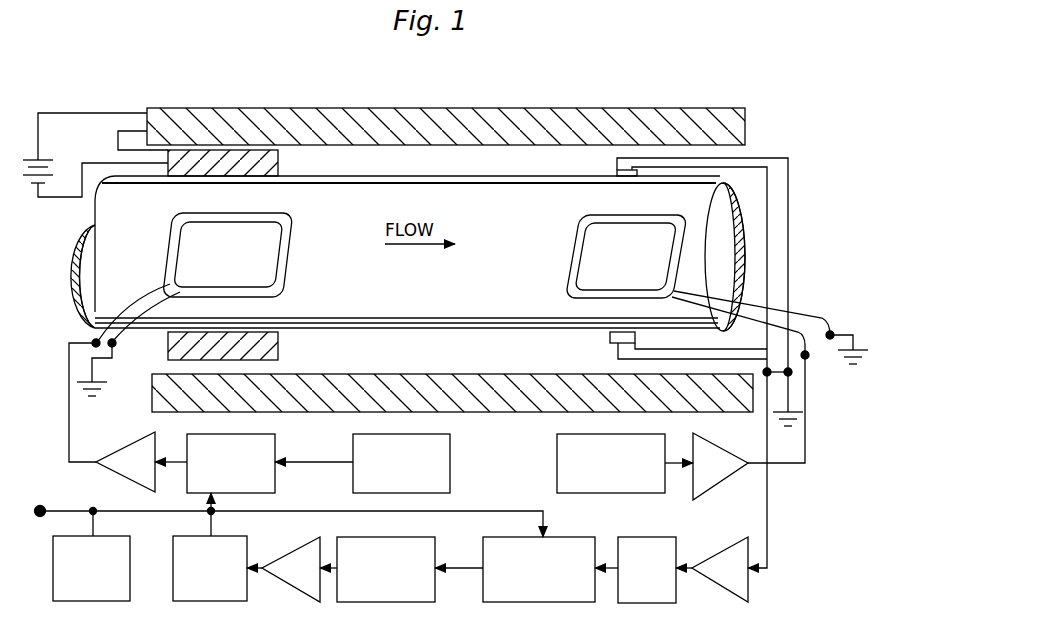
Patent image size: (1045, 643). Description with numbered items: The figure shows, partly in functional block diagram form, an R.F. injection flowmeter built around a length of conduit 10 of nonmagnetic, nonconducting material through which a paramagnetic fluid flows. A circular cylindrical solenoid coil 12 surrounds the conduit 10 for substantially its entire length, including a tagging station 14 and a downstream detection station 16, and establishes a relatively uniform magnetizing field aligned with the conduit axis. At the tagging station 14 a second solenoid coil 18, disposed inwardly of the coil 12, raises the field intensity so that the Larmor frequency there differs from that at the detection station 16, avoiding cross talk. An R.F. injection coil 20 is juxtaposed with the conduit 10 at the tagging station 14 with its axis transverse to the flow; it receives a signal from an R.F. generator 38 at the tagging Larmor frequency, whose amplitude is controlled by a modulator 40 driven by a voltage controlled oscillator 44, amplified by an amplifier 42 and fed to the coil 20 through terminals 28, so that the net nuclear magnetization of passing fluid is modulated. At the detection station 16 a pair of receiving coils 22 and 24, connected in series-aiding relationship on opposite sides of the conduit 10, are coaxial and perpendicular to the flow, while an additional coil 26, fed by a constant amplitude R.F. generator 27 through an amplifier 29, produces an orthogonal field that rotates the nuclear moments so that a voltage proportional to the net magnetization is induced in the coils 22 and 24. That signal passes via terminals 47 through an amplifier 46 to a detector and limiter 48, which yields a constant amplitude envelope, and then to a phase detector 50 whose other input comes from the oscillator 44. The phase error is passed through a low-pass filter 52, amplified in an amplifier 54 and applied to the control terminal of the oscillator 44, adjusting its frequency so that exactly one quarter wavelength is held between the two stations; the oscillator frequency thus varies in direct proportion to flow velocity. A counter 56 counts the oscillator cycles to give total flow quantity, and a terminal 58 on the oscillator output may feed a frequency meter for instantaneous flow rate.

The conduit 10 is at (142, 213).
The solenoid coil 12 is at (426, 118).
The tagging station 14 is at (228, 265).
The detection station 16 is at (631, 265).
The second solenoid coil 18 is at (279, 163).
The R.F. injection coil 20 is at (279, 284).
The receiving coil 22 is at (613, 174).
The receiving coil 24 is at (610, 341).
The additional coil 26 is at (577, 237).
The constant amplitude R.F. generator 27 is at (557, 468).
The terminals 28 is at (85, 353).
The amplifier 29 is at (710, 477).
The R.F. generator 38 is at (440, 452).
The modulator 40 is at (262, 450).
The amplifier 42 is at (137, 448).
The voltage controlled oscillator 44 is at (208, 590).
The amplifier 46 is at (737, 588).
The terminals 47 is at (778, 381).
The detector and limiter 48 is at (673, 596).
The phase detector 50 is at (568, 590).
The low-pass filter 52 is at (378, 590).
The amplifier 54 is at (304, 588).
The counter 56 is at (90, 590).
The terminal 58 is at (39, 508).